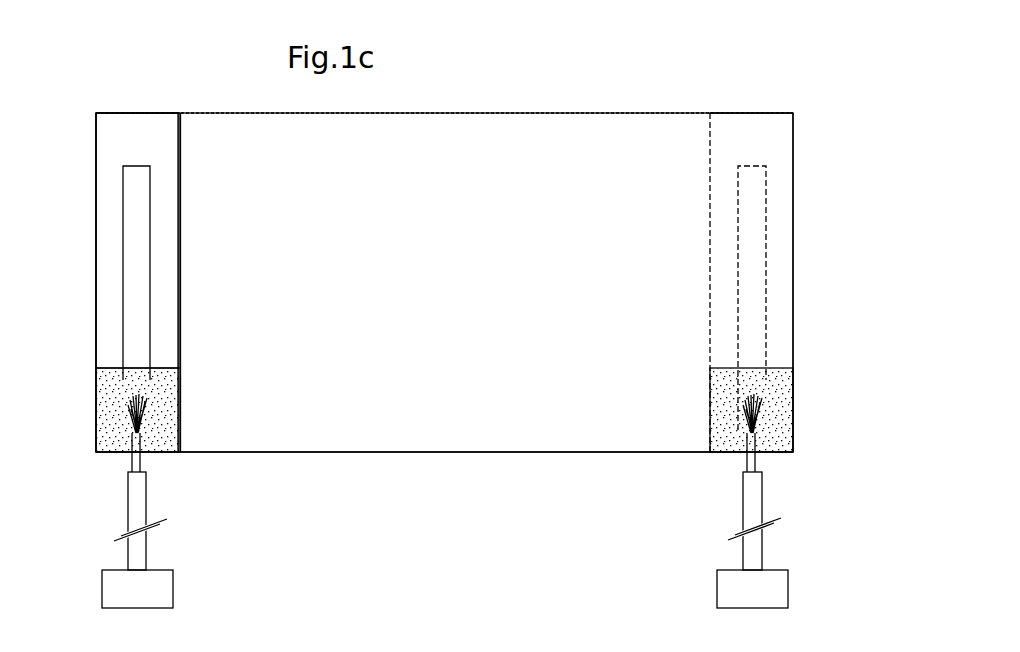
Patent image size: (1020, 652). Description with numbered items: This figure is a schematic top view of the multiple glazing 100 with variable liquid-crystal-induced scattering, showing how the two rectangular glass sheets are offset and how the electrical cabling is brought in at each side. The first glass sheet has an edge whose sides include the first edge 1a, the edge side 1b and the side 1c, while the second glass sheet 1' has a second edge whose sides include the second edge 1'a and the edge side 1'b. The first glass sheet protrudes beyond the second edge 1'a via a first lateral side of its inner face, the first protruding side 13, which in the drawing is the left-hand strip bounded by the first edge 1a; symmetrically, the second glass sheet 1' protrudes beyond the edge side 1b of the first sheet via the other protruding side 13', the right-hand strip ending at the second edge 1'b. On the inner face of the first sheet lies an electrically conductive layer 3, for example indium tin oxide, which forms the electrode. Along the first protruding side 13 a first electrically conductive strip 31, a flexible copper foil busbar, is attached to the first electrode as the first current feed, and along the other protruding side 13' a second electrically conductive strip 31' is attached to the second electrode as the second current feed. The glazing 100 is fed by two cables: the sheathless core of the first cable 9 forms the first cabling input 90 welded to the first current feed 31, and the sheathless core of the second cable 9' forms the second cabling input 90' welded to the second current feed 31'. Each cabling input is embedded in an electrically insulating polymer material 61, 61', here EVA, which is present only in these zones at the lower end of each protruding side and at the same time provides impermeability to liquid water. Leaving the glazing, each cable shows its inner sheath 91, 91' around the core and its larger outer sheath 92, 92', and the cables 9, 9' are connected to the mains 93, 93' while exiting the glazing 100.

The glazing 100 is at (558, 92).
The second glass sheet 1' is at (444, 106).
The side of the first glass sheet 1c is at (368, 452).
The first edge 1a is at (96, 137).
The second edge 1'a is at (199, 262).
The first protruding side 13 is at (137, 90).
The electrically conductive layer 3 is at (145, 152).
The first electrically conductive strip 31 is at (95, 273).
The electrically insulating polymer material 61 is at (170, 393).
The first cabling input 90 is at (91, 427).
The inner sheath 91 is at (100, 470).
The outer sheath 92 is at (113, 521).
The mains 93 is at (164, 593).
The first cable 9 is at (130, 505).
The edge side of the first glass sheet 1b is at (710, 138).
The second edge 1'b is at (827, 277).
The other protruding side 13' is at (751, 90).
The second electrically conductive strip 31' is at (798, 298).
The electrically insulating polymer material 61' is at (709, 393).
The second cabling input 90' is at (803, 427).
The inner sheath 91' is at (788, 471).
The outer sheath 92' is at (781, 521).
The mains 93' is at (725, 591).
The second cable 9' is at (762, 503).